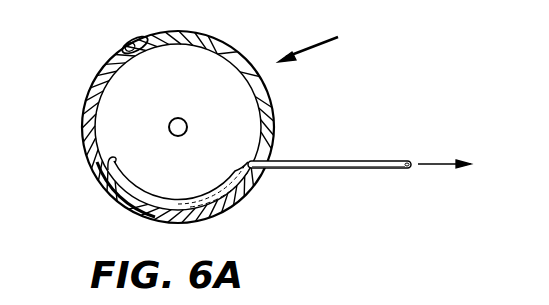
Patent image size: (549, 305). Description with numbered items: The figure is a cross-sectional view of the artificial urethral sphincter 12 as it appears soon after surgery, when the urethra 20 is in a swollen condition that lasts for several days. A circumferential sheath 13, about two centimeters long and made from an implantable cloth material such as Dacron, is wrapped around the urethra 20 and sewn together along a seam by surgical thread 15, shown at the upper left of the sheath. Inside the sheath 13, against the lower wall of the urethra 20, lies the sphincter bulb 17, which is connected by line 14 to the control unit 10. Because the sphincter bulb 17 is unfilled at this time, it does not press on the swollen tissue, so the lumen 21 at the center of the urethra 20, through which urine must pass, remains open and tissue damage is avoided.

The control unit 10 is at (432, 166).
The artificial urethral sphincter 12 is at (325, 44).
The circumferential sheath 13 is at (198, 33).
The line 14 is at (330, 170).
The surgical thread 15 is at (123, 42).
The sphincter bulb 17 is at (110, 162).
The urethra 20 is at (243, 103).
The lumen 21 is at (187, 126).